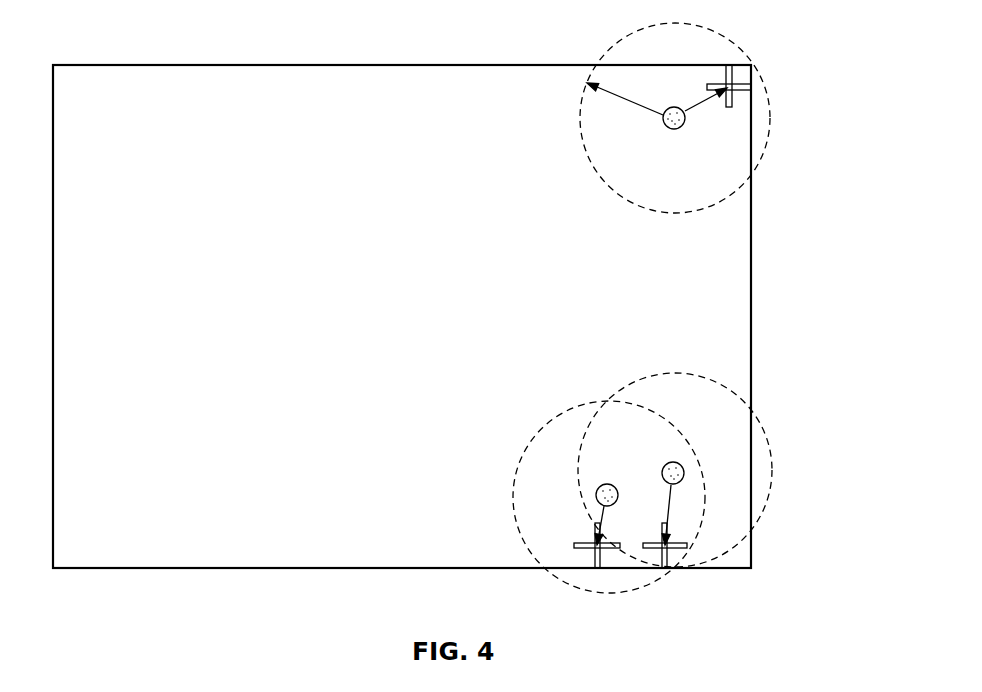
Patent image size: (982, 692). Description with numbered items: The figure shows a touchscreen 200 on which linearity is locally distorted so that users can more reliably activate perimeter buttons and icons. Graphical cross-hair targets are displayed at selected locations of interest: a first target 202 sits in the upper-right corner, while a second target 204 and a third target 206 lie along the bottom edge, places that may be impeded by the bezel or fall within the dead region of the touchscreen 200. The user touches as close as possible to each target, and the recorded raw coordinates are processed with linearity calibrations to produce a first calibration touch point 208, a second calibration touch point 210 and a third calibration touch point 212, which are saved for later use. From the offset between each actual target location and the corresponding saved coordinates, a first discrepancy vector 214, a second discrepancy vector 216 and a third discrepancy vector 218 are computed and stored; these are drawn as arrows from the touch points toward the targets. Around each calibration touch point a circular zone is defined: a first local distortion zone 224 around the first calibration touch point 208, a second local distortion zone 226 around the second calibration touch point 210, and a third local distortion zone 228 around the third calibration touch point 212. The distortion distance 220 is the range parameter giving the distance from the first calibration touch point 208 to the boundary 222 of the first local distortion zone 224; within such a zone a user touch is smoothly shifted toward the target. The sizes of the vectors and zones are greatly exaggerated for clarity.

The touchscreen 200 is at (118, 64).
The first target 202 is at (735, 74).
The second target 204 is at (590, 557).
The third target 206 is at (678, 558).
The first calibration touch point 208 is at (667, 126).
The second calibration touch point 210 is at (597, 491).
The third calibration touch point 212 is at (685, 475).
The first discrepancy vector 214 is at (685, 112).
The second discrepancy vector 216 is at (600, 513).
The third discrepancy vector 218 is at (670, 516).
The distortion distance 220 is at (663, 117).
The boundary 222 is at (610, 197).
The first local distortion zone 224 is at (675, 215).
The second local distortion zone 226 is at (510, 496).
The third local distortion zone 228 is at (767, 498).